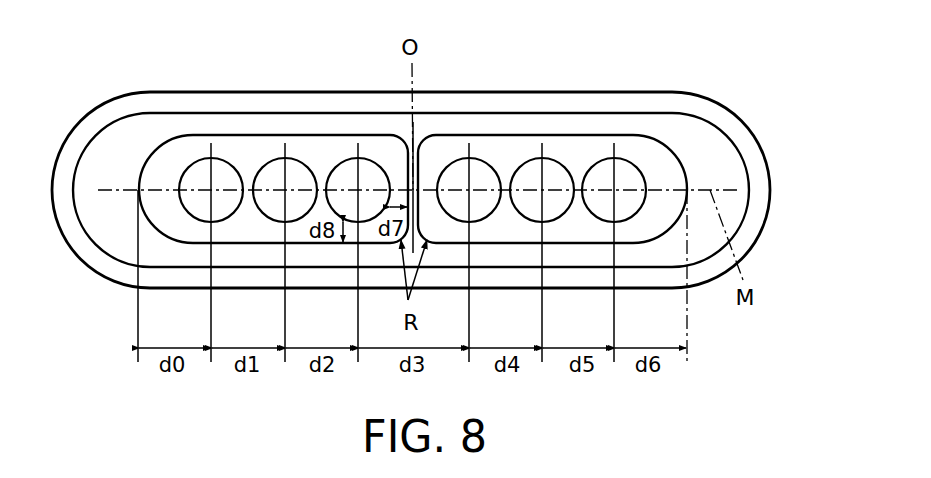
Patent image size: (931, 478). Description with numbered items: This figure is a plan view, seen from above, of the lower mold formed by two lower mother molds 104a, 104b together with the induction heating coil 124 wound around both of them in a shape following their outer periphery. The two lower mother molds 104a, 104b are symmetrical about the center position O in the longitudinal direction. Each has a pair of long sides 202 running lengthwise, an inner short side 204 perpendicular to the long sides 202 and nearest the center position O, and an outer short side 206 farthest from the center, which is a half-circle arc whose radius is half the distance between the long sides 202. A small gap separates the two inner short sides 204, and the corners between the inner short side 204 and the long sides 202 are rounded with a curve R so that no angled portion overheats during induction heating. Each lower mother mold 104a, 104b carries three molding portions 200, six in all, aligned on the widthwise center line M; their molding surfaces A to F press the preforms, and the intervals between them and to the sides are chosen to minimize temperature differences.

The lower mother mold 104a is at (248, 132).
The lower mother mold 104b is at (558, 130).
The induction heating coil 124 is at (729, 102).
The molding portion 200 is at (190, 165).
The long side 202 is at (307, 137).
The inner short side 204 is at (405, 165).
The outer short side 206 is at (142, 162).